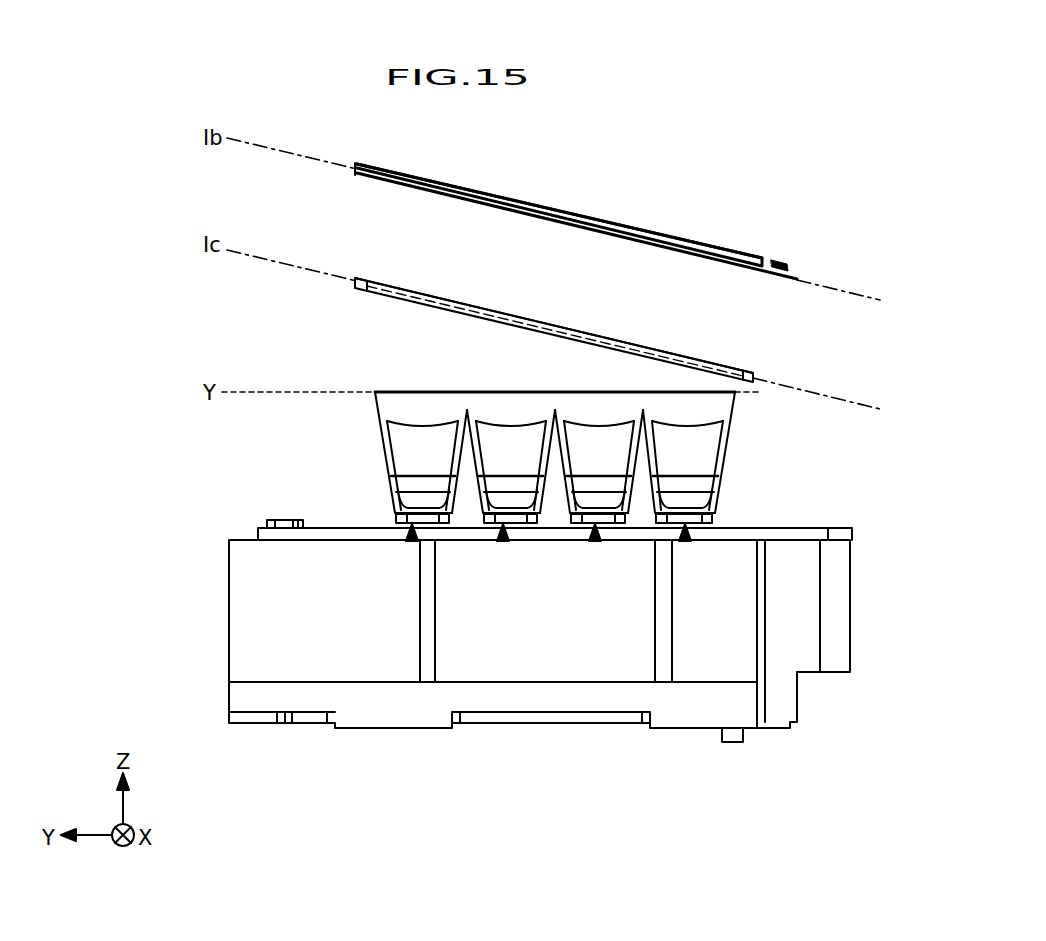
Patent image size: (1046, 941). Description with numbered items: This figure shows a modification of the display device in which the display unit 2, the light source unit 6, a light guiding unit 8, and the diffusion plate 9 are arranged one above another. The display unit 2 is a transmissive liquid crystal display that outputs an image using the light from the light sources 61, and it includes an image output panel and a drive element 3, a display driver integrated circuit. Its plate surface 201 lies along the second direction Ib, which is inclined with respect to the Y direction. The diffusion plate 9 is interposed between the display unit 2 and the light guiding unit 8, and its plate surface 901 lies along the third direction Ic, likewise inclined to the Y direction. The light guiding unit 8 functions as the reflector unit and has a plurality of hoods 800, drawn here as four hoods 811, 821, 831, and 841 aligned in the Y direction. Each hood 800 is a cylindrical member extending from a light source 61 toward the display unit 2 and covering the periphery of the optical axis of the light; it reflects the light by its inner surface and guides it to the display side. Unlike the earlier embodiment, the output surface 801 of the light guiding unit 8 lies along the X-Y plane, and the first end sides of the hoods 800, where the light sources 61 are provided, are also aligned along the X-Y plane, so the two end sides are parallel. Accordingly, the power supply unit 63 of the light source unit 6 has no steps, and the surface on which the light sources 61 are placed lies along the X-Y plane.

The display unit 2 is at (713, 250).
The plate surface 201 is at (542, 205).
The drive element 3 is at (787, 263).
The diffusion plate 9 is at (722, 368).
The plate surface 901 is at (492, 310).
The light guiding unit 8 is at (580, 593).
The output surface 801 is at (697, 383).
The hood 800 is at (608, 627).
The hood 811 is at (700, 437).
The hood 821 is at (595, 455).
The hood 831 is at (500, 455).
The hood 841 is at (401, 453).
The light source 61 is at (412, 540).
The power supply unit 63 is at (229, 623).
The light source unit 6 is at (480, 631).